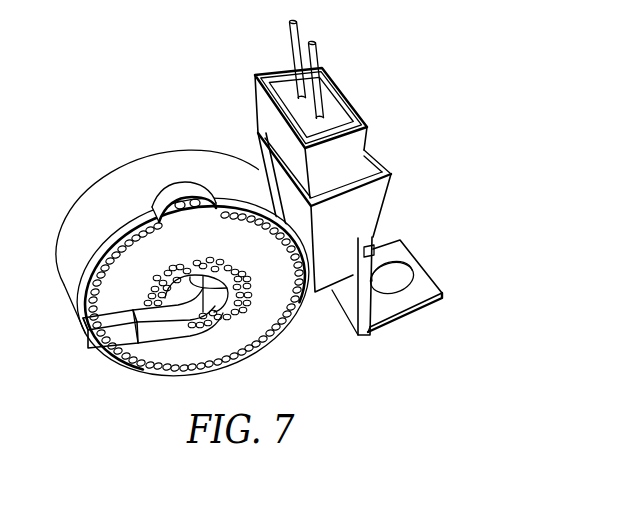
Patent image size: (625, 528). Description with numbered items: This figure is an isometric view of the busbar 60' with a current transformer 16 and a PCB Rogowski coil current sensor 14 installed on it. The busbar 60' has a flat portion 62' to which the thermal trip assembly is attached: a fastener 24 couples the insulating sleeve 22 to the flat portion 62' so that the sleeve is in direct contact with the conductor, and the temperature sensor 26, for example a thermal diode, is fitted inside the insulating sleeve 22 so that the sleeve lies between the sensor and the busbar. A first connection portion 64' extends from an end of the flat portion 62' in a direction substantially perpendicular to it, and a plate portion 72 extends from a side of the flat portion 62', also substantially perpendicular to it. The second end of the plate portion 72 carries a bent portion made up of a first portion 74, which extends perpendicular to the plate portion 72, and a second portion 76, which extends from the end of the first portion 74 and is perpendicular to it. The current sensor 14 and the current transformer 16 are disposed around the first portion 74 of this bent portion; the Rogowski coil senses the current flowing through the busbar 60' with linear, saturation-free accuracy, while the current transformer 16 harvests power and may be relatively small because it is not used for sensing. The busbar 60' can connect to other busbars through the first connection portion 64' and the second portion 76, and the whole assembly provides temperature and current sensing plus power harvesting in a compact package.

The current sensor 14 is at (123, 274).
The current transformer 16 is at (96, 208).
The insulating sleeve 22 is at (358, 142).
The fastener 24 is at (384, 198).
The temperature sensor 26 is at (285, 86).
The busbar 60' is at (399, 315).
The flat portion 62' is at (338, 302).
The first connection portion 64' is at (431, 289).
The plate portion 72 is at (253, 163).
The first portion 74 is at (223, 273).
The second portion 76 is at (88, 350).